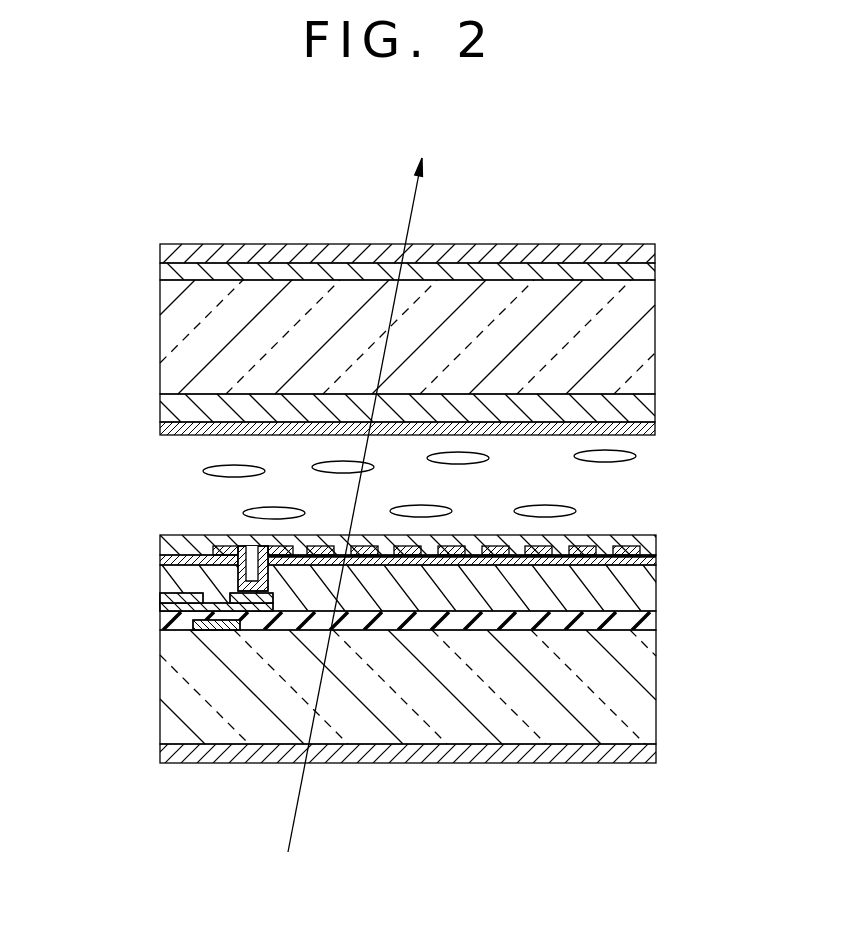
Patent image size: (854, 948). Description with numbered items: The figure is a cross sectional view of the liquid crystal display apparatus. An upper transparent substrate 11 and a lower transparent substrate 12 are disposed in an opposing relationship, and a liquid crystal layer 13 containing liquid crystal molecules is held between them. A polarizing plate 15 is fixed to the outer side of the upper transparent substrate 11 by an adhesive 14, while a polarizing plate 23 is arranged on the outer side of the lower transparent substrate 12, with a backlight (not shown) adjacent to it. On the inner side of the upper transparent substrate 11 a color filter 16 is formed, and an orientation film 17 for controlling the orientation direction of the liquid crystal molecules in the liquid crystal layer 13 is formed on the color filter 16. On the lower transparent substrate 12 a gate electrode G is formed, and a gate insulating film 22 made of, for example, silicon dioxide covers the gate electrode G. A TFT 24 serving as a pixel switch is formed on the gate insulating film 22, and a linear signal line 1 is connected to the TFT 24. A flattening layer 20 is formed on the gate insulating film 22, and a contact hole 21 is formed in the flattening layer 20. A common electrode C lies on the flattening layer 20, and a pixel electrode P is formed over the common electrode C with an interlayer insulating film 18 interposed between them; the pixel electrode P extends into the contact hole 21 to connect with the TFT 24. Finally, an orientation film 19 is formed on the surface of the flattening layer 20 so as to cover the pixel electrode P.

The polarizing plate 15 is at (162, 253).
The adhesive 14 is at (161, 271).
The upper transparent substrate 11 is at (168, 336).
The color filter 16 is at (162, 404).
The orientation film 17 is at (161, 430).
The liquid crystal layer 13 is at (576, 507).
The orientation film 19 is at (161, 540).
The interlayer insulating film 18 is at (161, 560).
The common electrode C is at (657, 558).
The flattening layer 20 is at (643, 593).
The gate insulating film 22 is at (161, 627).
The gate electrode G is at (207, 629).
The TFT 24 is at (222, 607).
The linear signal line 1 is at (161, 599).
The contact hole 21 is at (251, 550).
The pixel electrode P is at (212, 547).
The lower transparent substrate 12 is at (168, 698).
The polarizing plate 23 is at (167, 752).